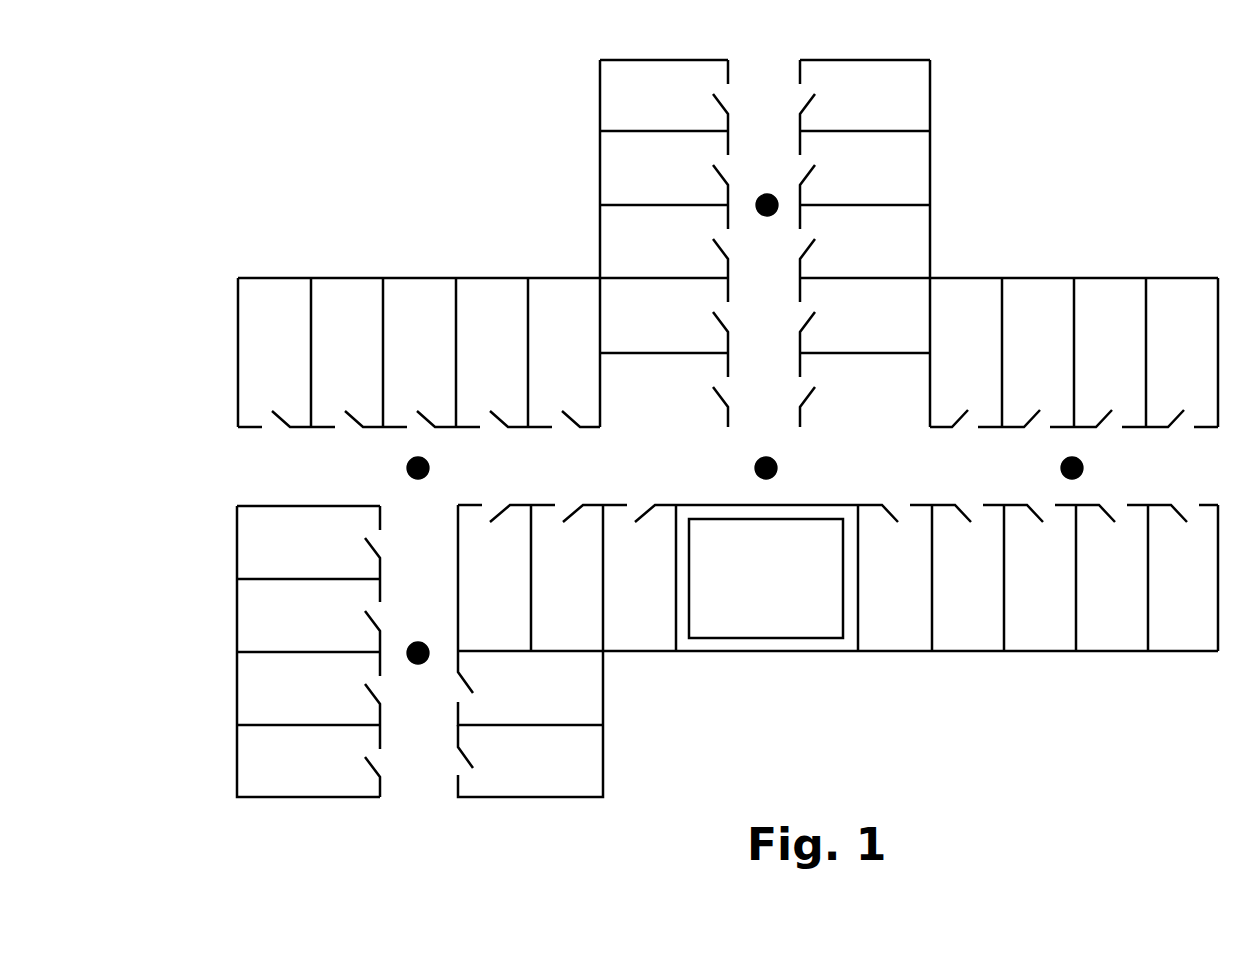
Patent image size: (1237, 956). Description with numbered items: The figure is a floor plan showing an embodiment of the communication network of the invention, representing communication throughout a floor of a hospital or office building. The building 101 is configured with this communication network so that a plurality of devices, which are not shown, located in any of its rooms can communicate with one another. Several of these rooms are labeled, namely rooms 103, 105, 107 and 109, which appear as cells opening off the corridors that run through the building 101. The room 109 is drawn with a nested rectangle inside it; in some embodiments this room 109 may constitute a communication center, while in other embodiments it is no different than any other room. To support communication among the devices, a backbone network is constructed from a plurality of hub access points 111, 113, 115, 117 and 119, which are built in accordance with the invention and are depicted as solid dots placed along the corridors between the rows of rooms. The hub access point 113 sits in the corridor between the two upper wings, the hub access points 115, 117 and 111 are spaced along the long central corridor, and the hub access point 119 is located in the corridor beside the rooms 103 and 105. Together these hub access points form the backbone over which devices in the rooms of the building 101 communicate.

The building 101 is at (979, 213).
The room 103 is at (585, 767).
The room 105 is at (588, 695).
The room 107 is at (629, 627).
The room 109 is at (807, 615).
The hub access point 111 is at (1083, 462).
The hub access point 113 is at (762, 197).
The hub access point 115 is at (430, 462).
The hub access point 117 is at (778, 462).
The hub access point 119 is at (412, 640).